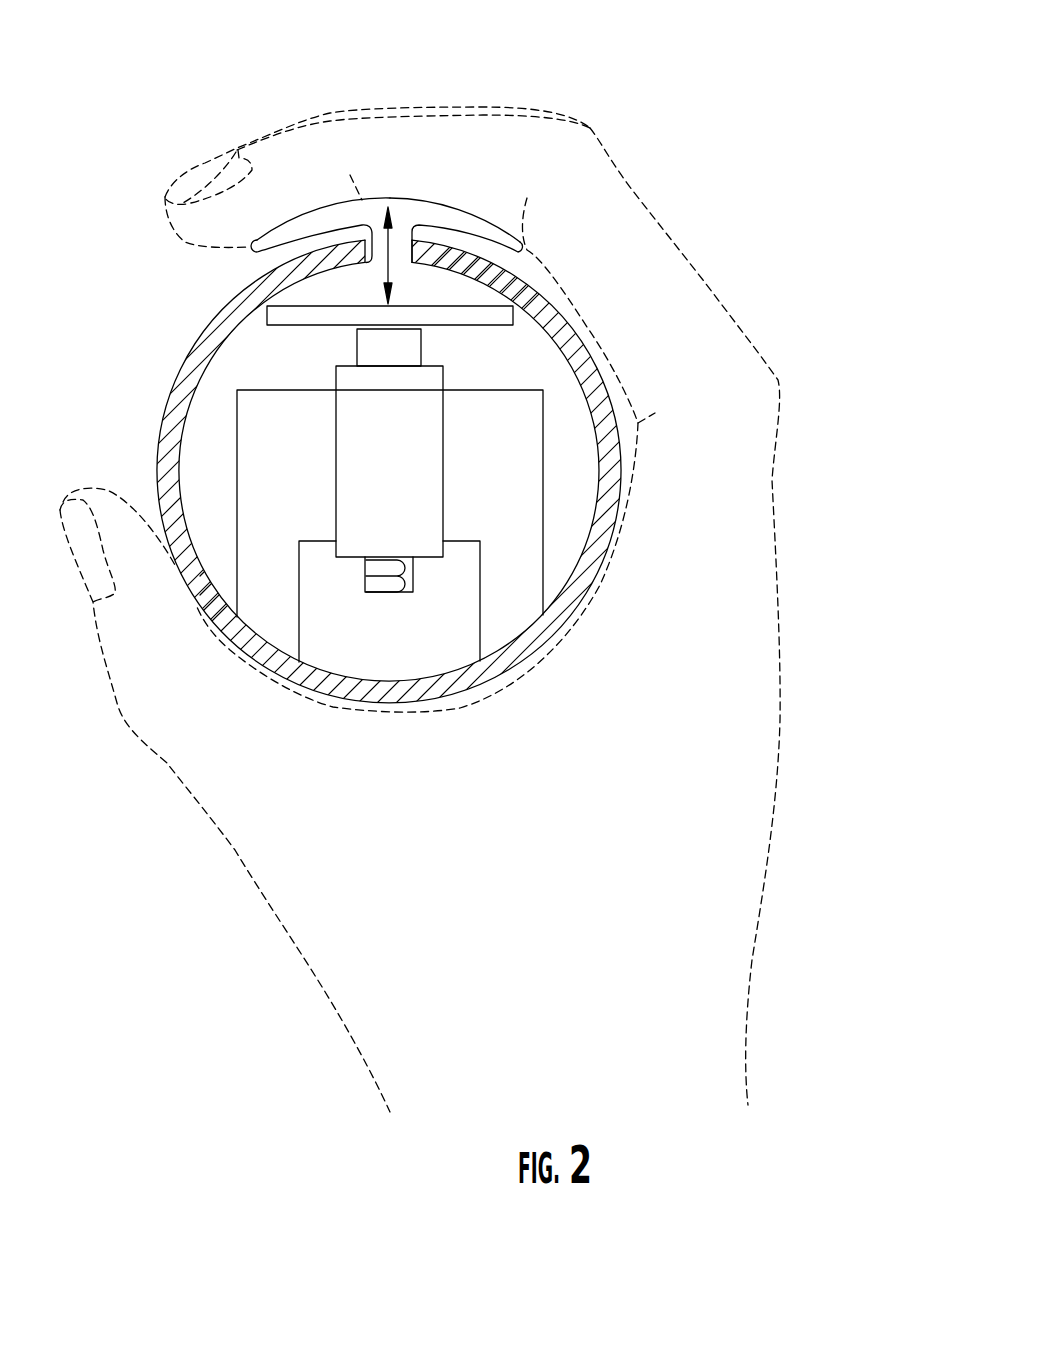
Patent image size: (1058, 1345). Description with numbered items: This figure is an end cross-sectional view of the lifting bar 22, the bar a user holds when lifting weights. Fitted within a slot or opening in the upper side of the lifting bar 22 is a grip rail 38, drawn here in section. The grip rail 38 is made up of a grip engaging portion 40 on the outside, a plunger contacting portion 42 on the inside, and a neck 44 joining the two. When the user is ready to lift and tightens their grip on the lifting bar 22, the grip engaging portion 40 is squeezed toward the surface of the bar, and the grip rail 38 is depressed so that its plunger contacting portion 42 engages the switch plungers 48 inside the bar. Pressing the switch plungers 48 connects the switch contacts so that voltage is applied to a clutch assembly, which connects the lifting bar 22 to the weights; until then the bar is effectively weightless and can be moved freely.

The lifting bar 22 is at (195, 372).
The grip rail 38 is at (252, 245).
The grip engaging portion 40 is at (485, 230).
The plunger contacting portion 42 is at (472, 303).
The neck 44 is at (400, 252).
The switch plungers 48 is at (407, 357).